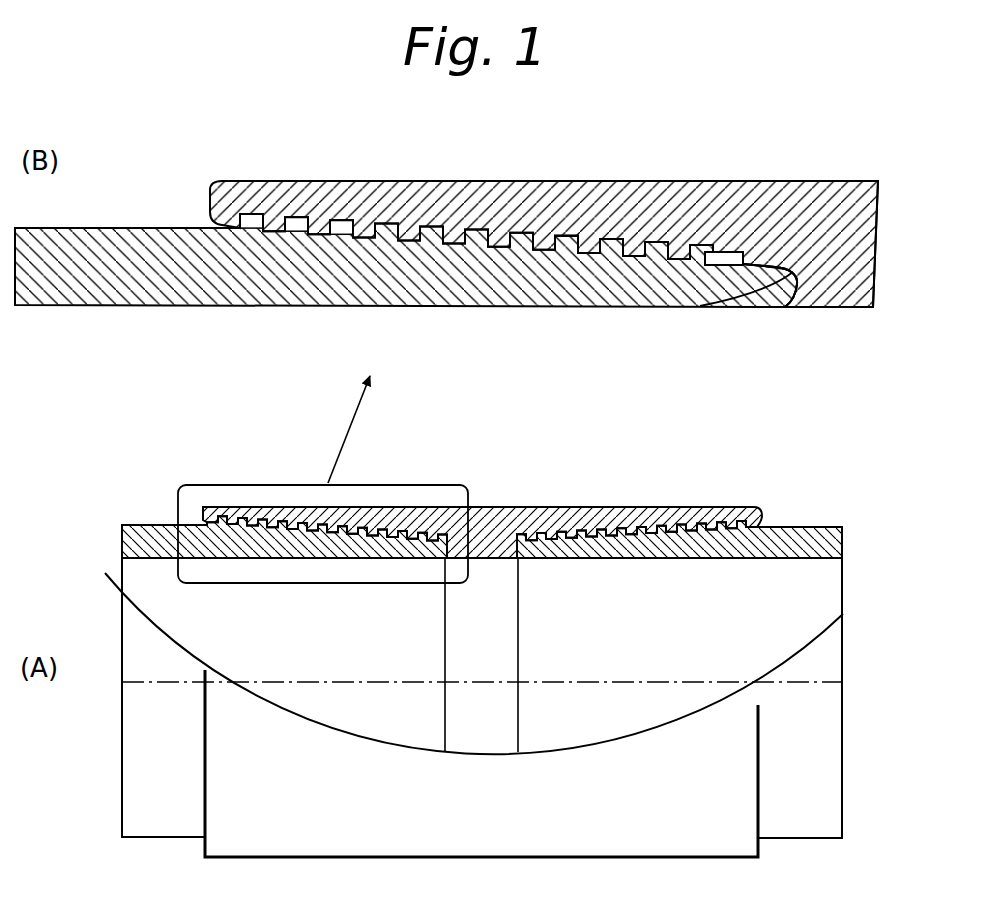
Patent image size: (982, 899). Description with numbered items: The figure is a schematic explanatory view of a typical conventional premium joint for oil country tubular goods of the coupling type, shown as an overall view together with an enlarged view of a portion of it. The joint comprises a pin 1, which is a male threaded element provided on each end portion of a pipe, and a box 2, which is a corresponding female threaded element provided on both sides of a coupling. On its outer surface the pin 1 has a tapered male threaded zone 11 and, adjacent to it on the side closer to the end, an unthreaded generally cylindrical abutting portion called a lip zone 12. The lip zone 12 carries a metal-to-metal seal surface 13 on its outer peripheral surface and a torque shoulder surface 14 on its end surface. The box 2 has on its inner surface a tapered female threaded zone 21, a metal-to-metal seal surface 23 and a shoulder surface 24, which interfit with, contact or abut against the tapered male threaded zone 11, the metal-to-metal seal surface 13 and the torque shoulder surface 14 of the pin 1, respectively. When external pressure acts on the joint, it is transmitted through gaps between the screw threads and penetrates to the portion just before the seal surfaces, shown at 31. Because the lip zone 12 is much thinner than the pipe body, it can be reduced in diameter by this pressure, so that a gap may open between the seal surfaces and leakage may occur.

The pin 1 is at (322, 267).
The box 2 is at (703, 215).
The tapered male threaded zone 11 is at (560, 247).
The lip zone 12 is at (690, 308).
The metal-to-metal seal surface 13 is at (752, 290).
The torque shoulder surface 14 is at (777, 306).
The tapered female threaded zone 21 is at (587, 243).
The metal-to-metal seal surface 23 is at (777, 267).
The shoulder surface 24 is at (871, 263).
The portion just before the seal surfaces 31 is at (727, 250).